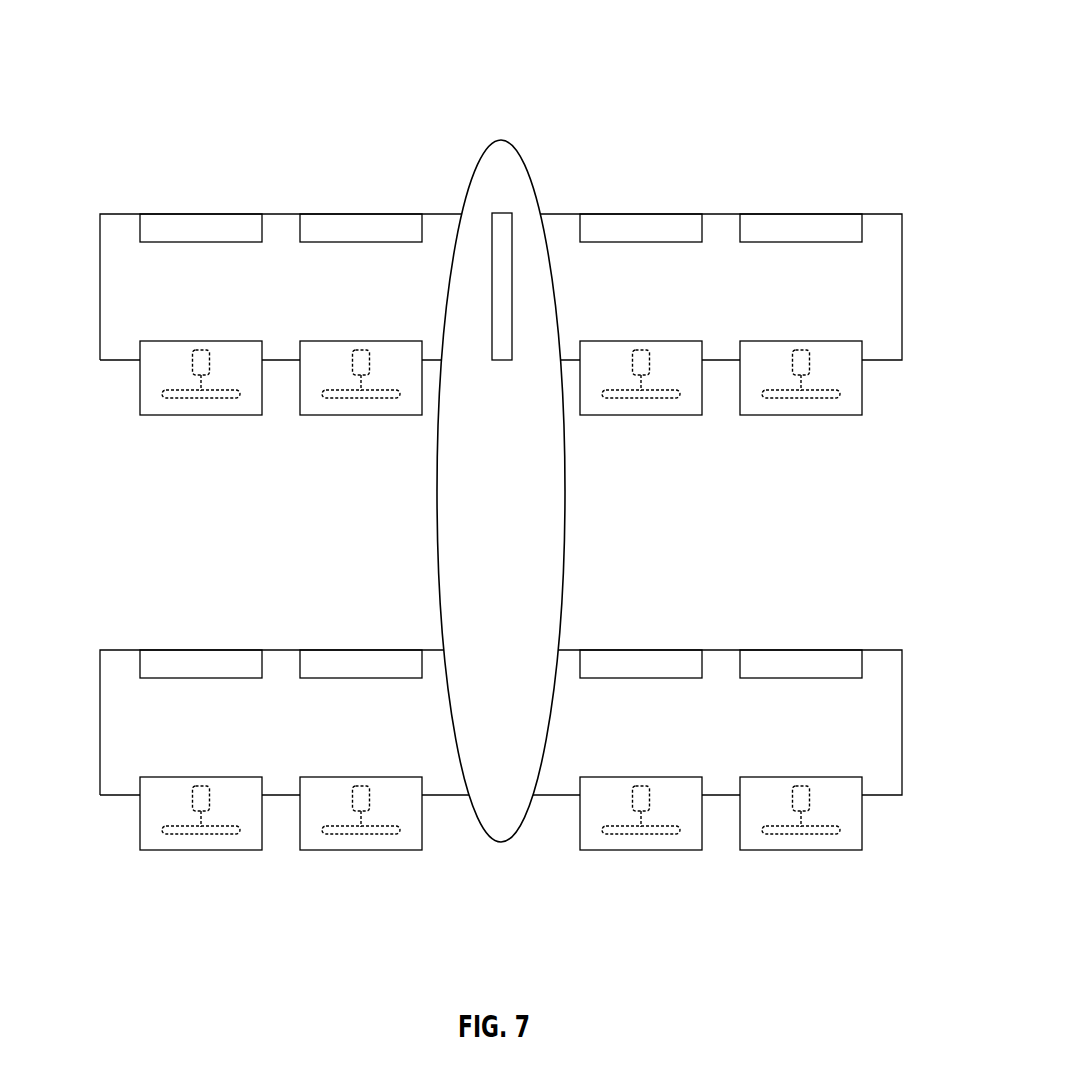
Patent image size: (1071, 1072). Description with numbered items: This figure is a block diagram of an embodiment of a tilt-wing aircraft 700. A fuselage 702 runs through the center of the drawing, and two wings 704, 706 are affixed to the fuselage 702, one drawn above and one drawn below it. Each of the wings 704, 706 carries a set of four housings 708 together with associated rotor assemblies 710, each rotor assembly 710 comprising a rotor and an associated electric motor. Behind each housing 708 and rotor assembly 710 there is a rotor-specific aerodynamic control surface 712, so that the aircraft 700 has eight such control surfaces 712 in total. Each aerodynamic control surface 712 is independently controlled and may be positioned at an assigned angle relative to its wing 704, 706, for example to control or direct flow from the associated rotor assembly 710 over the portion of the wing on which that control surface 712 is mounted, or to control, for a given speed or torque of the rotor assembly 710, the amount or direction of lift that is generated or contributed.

The aircraft 700 is at (148, 64).
The fuselage 702 is at (563, 488).
The wing 704 is at (538, 751).
The wing 706 is at (880, 302).
The housing 708 is at (160, 850).
The rotor assembly 710 is at (212, 834).
The rotor-specific aerodynamic control surface 712 is at (195, 650).